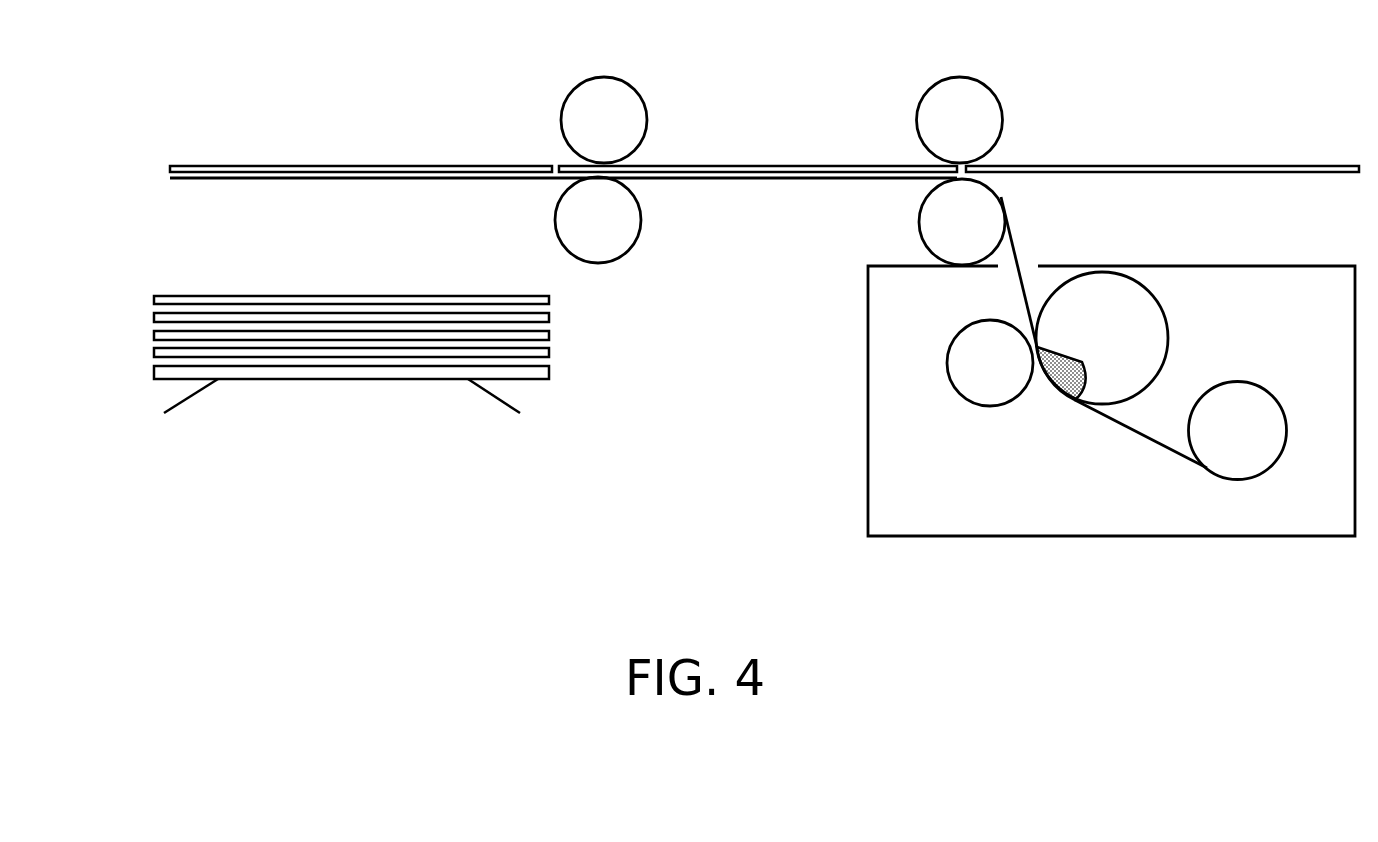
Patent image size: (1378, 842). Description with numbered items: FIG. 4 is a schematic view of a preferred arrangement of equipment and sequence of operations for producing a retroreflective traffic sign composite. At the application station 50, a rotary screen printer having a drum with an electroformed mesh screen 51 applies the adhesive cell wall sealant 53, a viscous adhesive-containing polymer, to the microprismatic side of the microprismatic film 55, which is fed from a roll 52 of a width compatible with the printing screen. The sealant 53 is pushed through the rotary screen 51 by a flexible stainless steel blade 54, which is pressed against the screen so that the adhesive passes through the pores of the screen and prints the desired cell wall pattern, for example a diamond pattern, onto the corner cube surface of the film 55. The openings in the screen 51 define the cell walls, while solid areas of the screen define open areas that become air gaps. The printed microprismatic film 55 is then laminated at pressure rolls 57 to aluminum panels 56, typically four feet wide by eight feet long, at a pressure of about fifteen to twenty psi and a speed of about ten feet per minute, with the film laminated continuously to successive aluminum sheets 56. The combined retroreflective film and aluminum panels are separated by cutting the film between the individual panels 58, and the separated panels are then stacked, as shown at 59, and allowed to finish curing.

The application station 50 is at (945, 448).
The rotary screen drum 51 is at (1162, 310).
The roll 52 is at (1273, 395).
The adhesive cell wall sealant 53 is at (1055, 386).
The blade 54 is at (1095, 363).
The microprismatic film 55 is at (1017, 260).
The aluminum panels 56 is at (1107, 163).
The pressure rolls 57 is at (966, 77).
The individual panels 58 is at (555, 165).
The stacked panels 59 is at (257, 295).